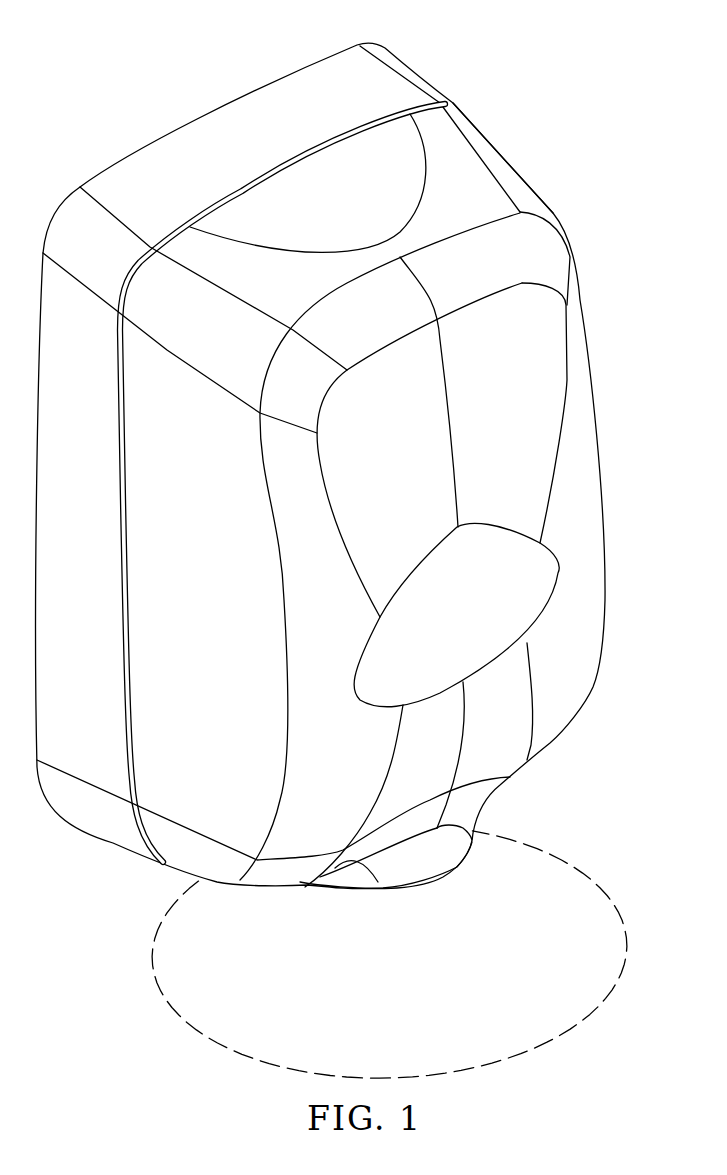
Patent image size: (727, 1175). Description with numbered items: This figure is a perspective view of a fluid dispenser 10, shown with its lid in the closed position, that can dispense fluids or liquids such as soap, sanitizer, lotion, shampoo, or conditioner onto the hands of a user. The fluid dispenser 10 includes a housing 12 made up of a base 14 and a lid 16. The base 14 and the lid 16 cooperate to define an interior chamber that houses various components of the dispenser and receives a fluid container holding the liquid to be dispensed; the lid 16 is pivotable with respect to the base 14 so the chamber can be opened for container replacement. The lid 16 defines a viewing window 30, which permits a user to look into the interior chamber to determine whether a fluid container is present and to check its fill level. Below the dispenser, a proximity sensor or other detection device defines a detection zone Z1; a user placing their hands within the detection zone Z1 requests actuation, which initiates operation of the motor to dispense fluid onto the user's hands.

The fluid dispenser 10 is at (147, 70).
The housing 12 is at (433, 57).
The base 14 is at (278, 88).
The lid 16 is at (493, 160).
The viewing window 30 is at (503, 547).
The detection zone Z1 is at (587, 865).